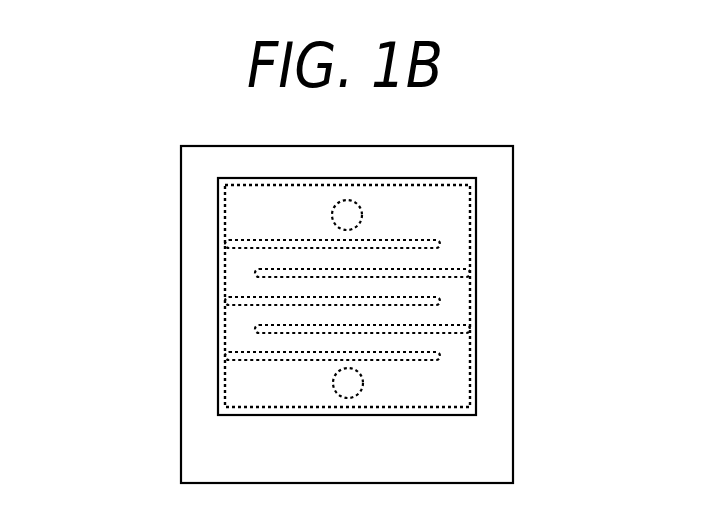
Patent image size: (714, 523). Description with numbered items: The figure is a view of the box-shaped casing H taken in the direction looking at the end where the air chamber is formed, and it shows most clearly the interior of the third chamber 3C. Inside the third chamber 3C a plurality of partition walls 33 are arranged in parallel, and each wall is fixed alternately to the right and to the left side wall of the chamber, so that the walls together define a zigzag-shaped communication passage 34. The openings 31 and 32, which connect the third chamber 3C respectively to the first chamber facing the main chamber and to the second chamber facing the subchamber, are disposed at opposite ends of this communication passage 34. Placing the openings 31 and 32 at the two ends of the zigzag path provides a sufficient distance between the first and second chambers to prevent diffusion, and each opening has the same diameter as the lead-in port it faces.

The casing H is at (517, 425).
The third chamber 3C is at (452, 218).
The opening 31 is at (345, 383).
The opening 32 is at (347, 215).
The partition walls 33 is at (267, 358).
The communication passage 34 is at (243, 263).